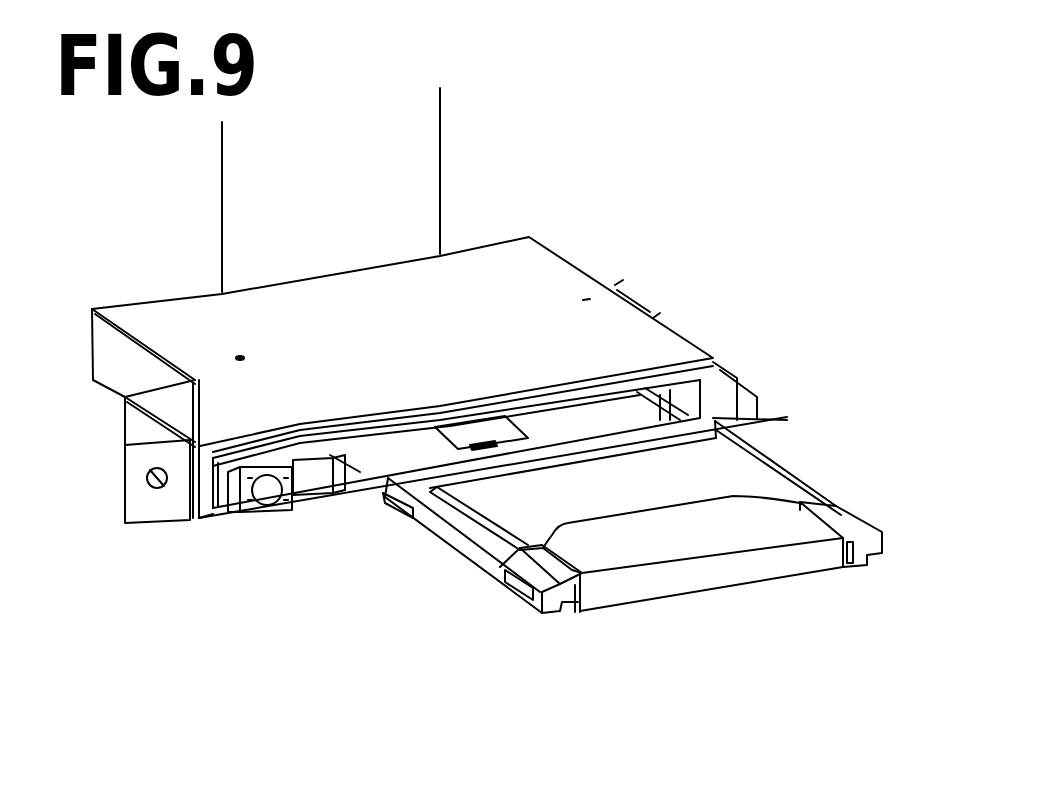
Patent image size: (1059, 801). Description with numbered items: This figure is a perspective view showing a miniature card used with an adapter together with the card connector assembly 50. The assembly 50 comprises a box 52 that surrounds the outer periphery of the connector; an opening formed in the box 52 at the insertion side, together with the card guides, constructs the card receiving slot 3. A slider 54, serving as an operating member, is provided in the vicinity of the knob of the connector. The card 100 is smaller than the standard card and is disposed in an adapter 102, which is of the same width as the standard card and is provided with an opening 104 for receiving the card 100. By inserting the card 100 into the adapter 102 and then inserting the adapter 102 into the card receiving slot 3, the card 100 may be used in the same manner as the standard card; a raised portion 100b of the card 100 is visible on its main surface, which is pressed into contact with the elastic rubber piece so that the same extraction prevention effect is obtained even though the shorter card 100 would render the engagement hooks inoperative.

The assembly 50 is at (613, 207).
The box 52 is at (503, 243).
The card receiving slot 3 is at (410, 442).
The slider 54 is at (260, 517).
The card 100 is at (787, 563).
The raised portion of tray 100b is at (703, 532).
The adapter 102 is at (450, 540).
The opening 104 is at (603, 596).